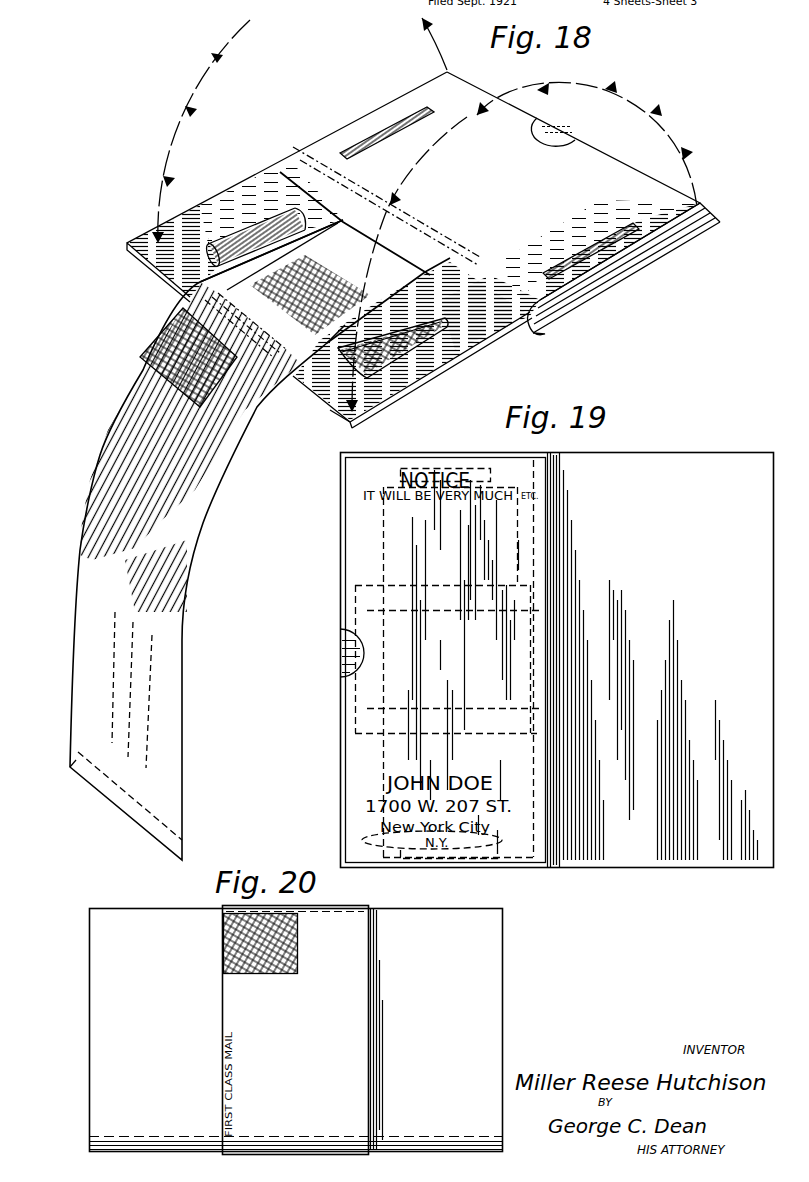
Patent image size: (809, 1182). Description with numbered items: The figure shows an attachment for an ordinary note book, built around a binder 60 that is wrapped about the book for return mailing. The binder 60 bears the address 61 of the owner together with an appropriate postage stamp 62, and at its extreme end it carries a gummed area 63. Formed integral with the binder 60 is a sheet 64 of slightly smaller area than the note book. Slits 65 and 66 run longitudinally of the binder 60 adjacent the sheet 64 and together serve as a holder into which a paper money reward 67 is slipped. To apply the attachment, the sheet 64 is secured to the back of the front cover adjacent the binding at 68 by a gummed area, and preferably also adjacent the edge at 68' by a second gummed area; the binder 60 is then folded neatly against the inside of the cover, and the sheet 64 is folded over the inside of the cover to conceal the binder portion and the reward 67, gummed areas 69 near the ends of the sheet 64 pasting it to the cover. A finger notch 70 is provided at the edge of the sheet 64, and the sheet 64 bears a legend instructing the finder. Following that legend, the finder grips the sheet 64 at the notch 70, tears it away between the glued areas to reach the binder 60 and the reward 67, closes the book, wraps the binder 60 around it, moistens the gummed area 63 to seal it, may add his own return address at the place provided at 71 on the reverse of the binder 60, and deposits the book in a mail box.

In FIG. 18, the binder 60 is at (118, 442).
In FIG. 18, the address 61 is at (165, 457).
In FIG. 20, the address 61 is at (290, 1072).
In FIG. 18, the postage stamp 62 is at (184, 340).
In FIG. 20, the postage stamp 62 is at (222, 916).
In FIG. 18, the gummed area 63 is at (72, 762).
In FIG. 18, the sheet 64 is at (460, 100).
In FIG. 18, the slit 65 is at (330, 250).
In FIG. 18, the slit 66 is at (450, 285).
In FIG. 18, the paper money reward 67 is at (250, 228).
In FIG. 18, the gummed securing point adjacent the binding 68 is at (506, 315).
In FIG. 18, the gummed securing point adjacent the edge 68' is at (317, 402).
In FIG. 18, the gummed areas 69 is at (388, 130).
In FIG. 18, the finger notch 70 is at (552, 138).
In FIG. 18, the return address place 71 is at (150, 648).